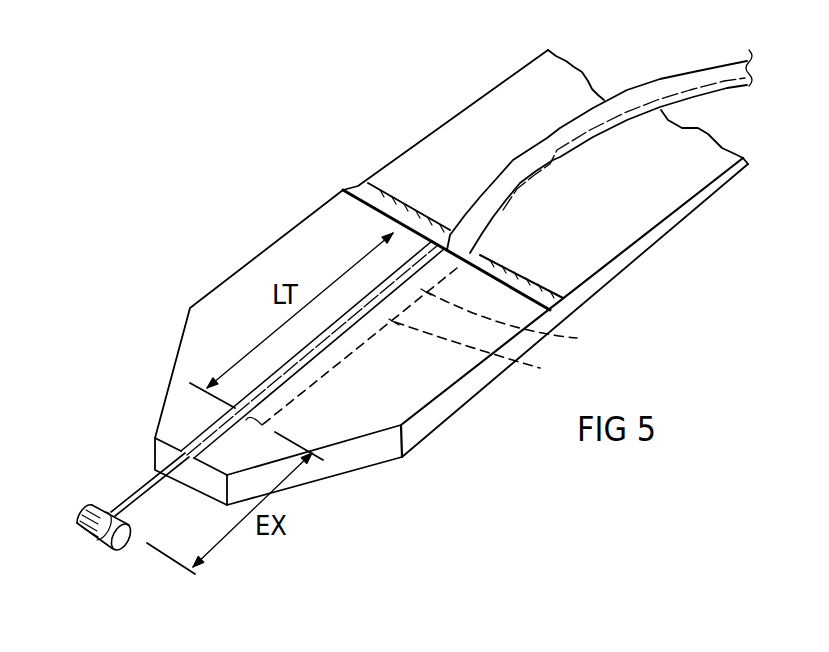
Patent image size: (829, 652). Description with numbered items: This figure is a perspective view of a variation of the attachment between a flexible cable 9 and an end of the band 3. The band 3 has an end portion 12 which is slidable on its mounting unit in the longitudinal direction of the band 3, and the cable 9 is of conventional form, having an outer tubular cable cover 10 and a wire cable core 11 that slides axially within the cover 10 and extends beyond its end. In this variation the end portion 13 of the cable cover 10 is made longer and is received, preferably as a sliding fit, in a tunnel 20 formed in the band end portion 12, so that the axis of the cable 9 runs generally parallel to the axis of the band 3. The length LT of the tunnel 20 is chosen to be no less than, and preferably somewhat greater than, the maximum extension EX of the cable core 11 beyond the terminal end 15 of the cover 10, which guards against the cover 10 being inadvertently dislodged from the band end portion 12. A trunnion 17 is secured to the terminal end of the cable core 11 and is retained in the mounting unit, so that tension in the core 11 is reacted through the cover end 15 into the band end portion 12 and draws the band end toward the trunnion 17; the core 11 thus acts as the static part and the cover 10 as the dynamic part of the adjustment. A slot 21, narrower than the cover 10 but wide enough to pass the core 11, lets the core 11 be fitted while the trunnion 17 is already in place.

The band 3 is at (386, 162).
The flexible cable 9 is at (675, 78).
The cable cover 10 is at (552, 140).
The cable core 11 is at (146, 488).
The end portion of the band 12 is at (393, 397).
The end portion of the cable cover 13 is at (577, 338).
The terminal end of the cable cover 15 is at (160, 422).
The trunnion 17 is at (98, 533).
The tunnel 20 is at (538, 368).
The slot 21 is at (295, 363).